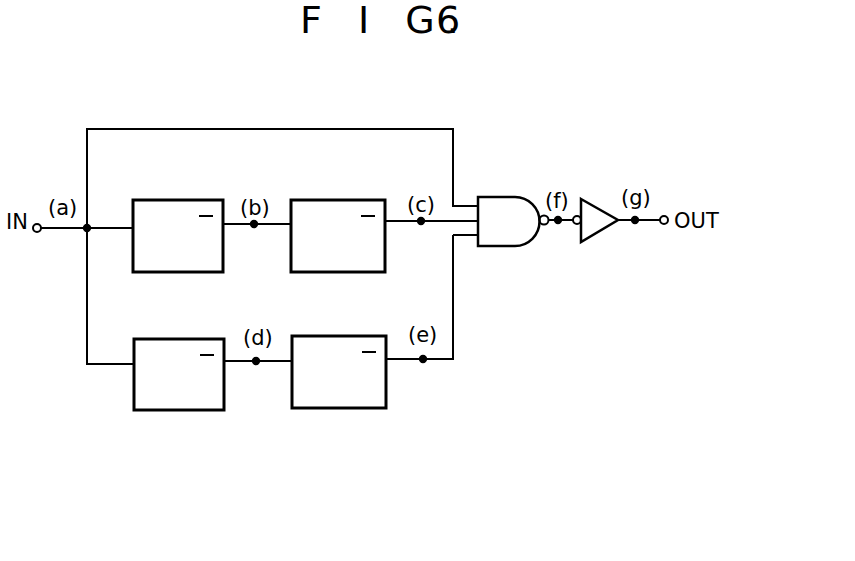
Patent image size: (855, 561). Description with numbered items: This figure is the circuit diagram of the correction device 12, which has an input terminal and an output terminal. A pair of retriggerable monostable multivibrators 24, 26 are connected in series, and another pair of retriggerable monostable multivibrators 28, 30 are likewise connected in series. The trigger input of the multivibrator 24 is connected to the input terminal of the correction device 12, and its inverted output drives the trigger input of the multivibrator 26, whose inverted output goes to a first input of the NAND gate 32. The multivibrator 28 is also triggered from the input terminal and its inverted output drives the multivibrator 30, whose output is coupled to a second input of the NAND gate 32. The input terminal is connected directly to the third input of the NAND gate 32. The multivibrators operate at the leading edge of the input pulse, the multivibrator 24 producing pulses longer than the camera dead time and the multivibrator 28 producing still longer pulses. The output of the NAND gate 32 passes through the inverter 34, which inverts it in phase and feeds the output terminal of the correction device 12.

The correction device 12 is at (467, 132).
The retriggerable monostable multivibrator 24 is at (193, 208).
The retriggerable monostable multivibrator 26 is at (351, 206).
The retriggerable monostable multivibrator 28 is at (166, 402).
The retriggerable monostable multivibrator 30 is at (316, 400).
The NAND gate 32 is at (518, 206).
The inverter 34 is at (595, 206).